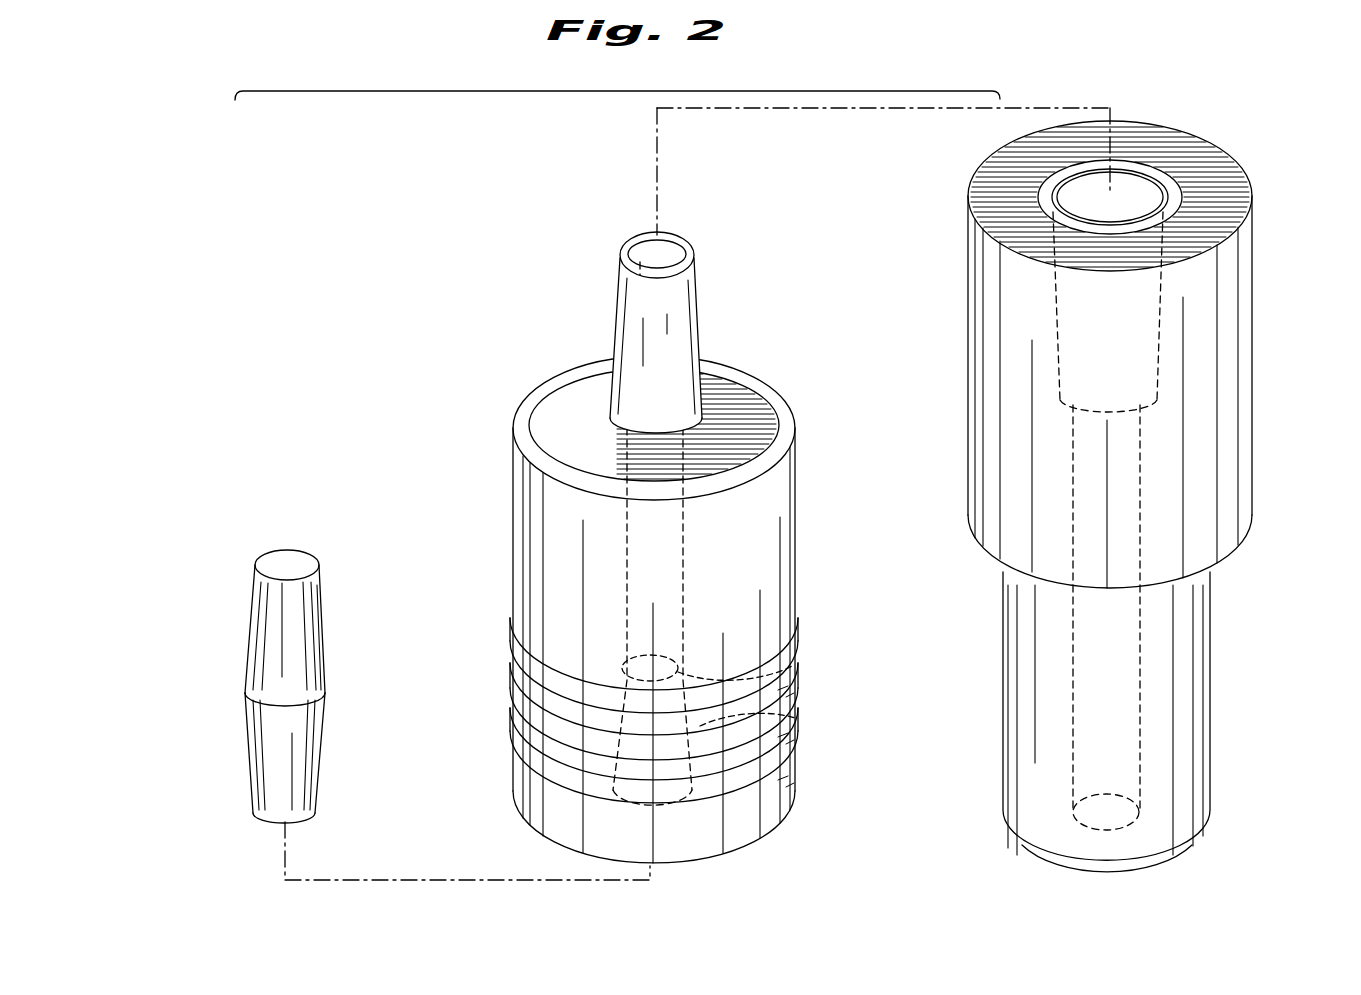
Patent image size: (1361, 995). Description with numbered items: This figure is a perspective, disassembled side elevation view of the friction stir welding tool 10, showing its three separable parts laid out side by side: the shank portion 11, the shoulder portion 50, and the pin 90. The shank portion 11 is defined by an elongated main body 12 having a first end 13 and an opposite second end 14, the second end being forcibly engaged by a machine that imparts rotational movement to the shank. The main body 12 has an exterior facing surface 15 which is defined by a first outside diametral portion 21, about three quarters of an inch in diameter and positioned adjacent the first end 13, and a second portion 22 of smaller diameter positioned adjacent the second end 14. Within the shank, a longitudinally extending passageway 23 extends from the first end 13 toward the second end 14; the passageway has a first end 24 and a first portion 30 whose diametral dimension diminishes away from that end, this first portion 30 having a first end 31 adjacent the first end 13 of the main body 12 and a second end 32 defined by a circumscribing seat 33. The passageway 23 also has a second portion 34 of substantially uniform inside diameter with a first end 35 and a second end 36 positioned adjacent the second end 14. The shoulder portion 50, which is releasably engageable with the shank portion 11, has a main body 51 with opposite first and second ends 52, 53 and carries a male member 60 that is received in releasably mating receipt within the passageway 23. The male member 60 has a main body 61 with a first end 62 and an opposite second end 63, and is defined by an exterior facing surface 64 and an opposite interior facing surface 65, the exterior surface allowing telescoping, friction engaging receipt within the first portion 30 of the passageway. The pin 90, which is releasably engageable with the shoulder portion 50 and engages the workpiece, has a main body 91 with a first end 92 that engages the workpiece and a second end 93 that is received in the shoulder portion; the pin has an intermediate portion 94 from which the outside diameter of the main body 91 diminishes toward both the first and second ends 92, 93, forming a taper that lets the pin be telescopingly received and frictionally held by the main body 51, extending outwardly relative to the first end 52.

The friction stir welding tool 10 is at (641, 90).
The shank portion 11 is at (1275, 599).
The main body 12 is at (1230, 402).
The first end 13 is at (1243, 192).
The second end 14 is at (1172, 845).
The exterior facing surface 15 is at (1242, 501).
The first outside diametral portion 21 is at (1232, 300).
The second portion 22 is at (1200, 698).
The longitudinally extending passageway 23 is at (1125, 180).
The first end 24 is at (1152, 188).
The first portion 30 is at (795, 718).
The first end 31 is at (692, 800).
The second end 32 is at (792, 666).
The circumscribing seat 33 is at (674, 662).
The second portion 34 is at (685, 528).
The first end 35 is at (686, 586).
The second end 36 is at (700, 300).
The shoulder portion 50 is at (488, 613).
The main body 51 is at (535, 531).
The first end 52 is at (788, 810).
The second end 53 is at (788, 398).
The male member 60 is at (568, 346).
The main body 61 is at (692, 338).
The first end 62 is at (610, 408).
The second end 63 is at (617, 309).
The exterior facing surface 64 is at (697, 392).
The interior facing surface 65 is at (670, 245).
The pin 90 is at (162, 566).
The main body 91 is at (259, 752).
The first end 92 is at (297, 596).
The second end 93 is at (305, 784).
The intermediate portion 94 is at (270, 706).